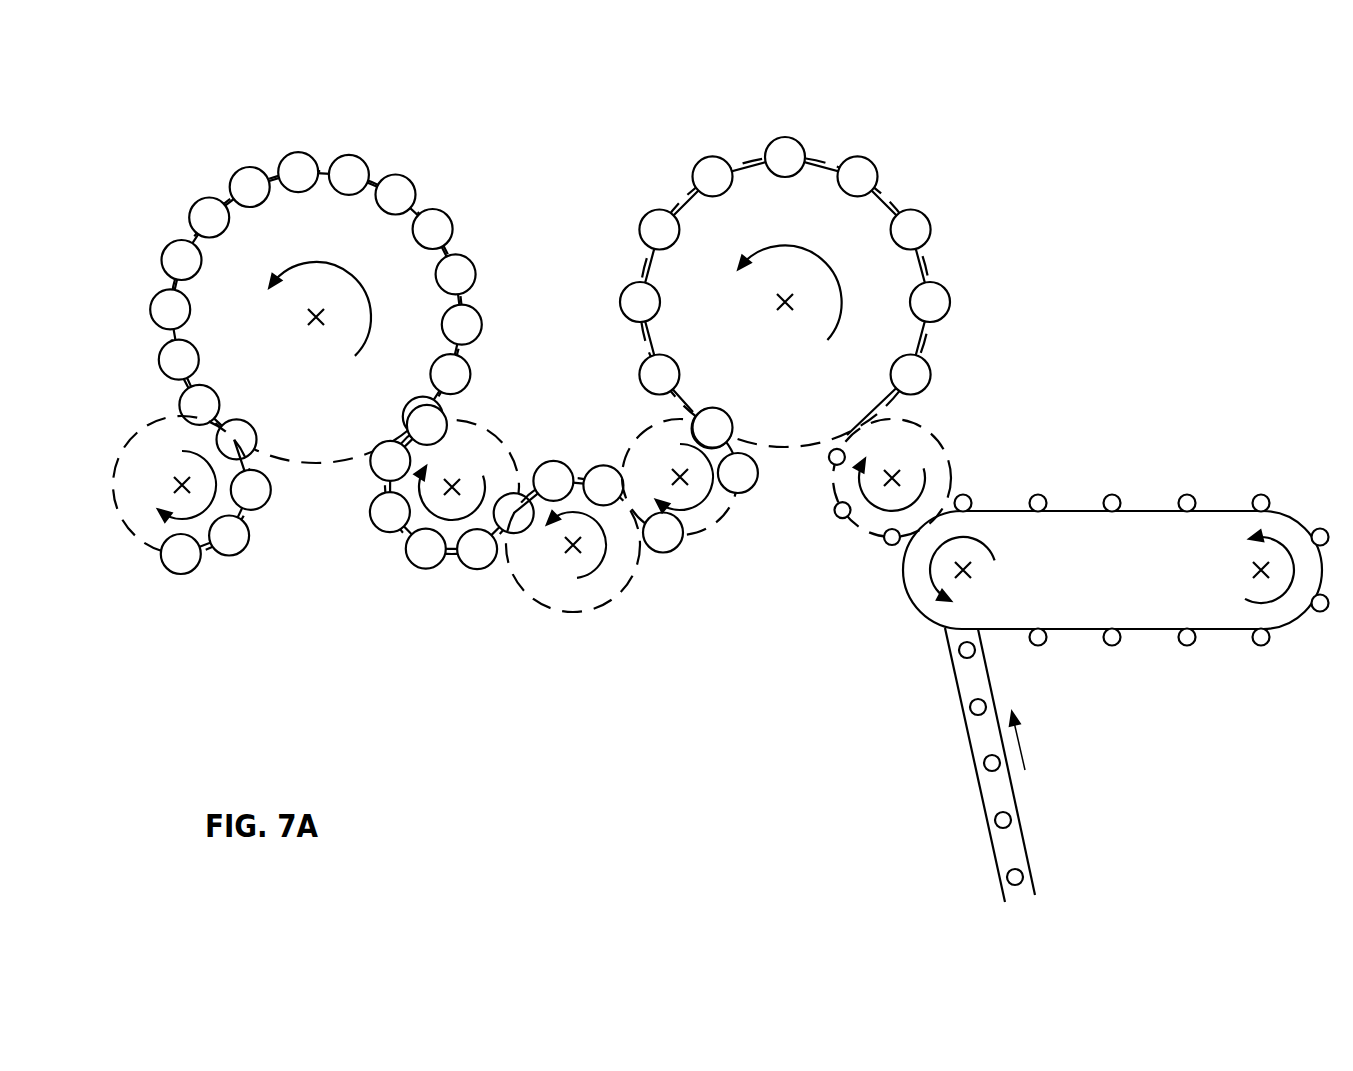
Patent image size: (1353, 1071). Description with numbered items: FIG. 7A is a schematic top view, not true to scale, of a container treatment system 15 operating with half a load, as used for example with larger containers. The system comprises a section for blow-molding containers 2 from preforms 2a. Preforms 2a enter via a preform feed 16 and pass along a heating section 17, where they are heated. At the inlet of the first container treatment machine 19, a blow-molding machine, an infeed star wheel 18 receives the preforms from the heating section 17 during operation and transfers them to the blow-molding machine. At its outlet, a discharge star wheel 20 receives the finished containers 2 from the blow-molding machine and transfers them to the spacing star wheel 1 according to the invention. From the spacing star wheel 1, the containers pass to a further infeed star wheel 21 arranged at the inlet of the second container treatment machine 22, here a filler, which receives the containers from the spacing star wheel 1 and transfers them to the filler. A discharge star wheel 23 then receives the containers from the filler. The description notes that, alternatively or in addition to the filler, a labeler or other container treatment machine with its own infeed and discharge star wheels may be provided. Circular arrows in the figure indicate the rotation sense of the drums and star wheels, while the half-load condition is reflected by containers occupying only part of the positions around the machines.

The container treatment system 15 is at (268, 102).
The second container treatment machine 22 is at (378, 188).
The discharge star wheel 23 is at (132, 442).
The infeed star wheel 21 is at (512, 450).
The spacing star wheel 1 is at (630, 580).
The discharge star wheel 20 is at (730, 505).
The first container treatment machine 19 is at (925, 263).
The container 2 is at (950, 305).
The infeed star wheel 18 is at (952, 460).
The heating section 17 is at (1155, 508).
The preform 2a is at (1261, 493).
The preform feed 16 is at (1027, 843).